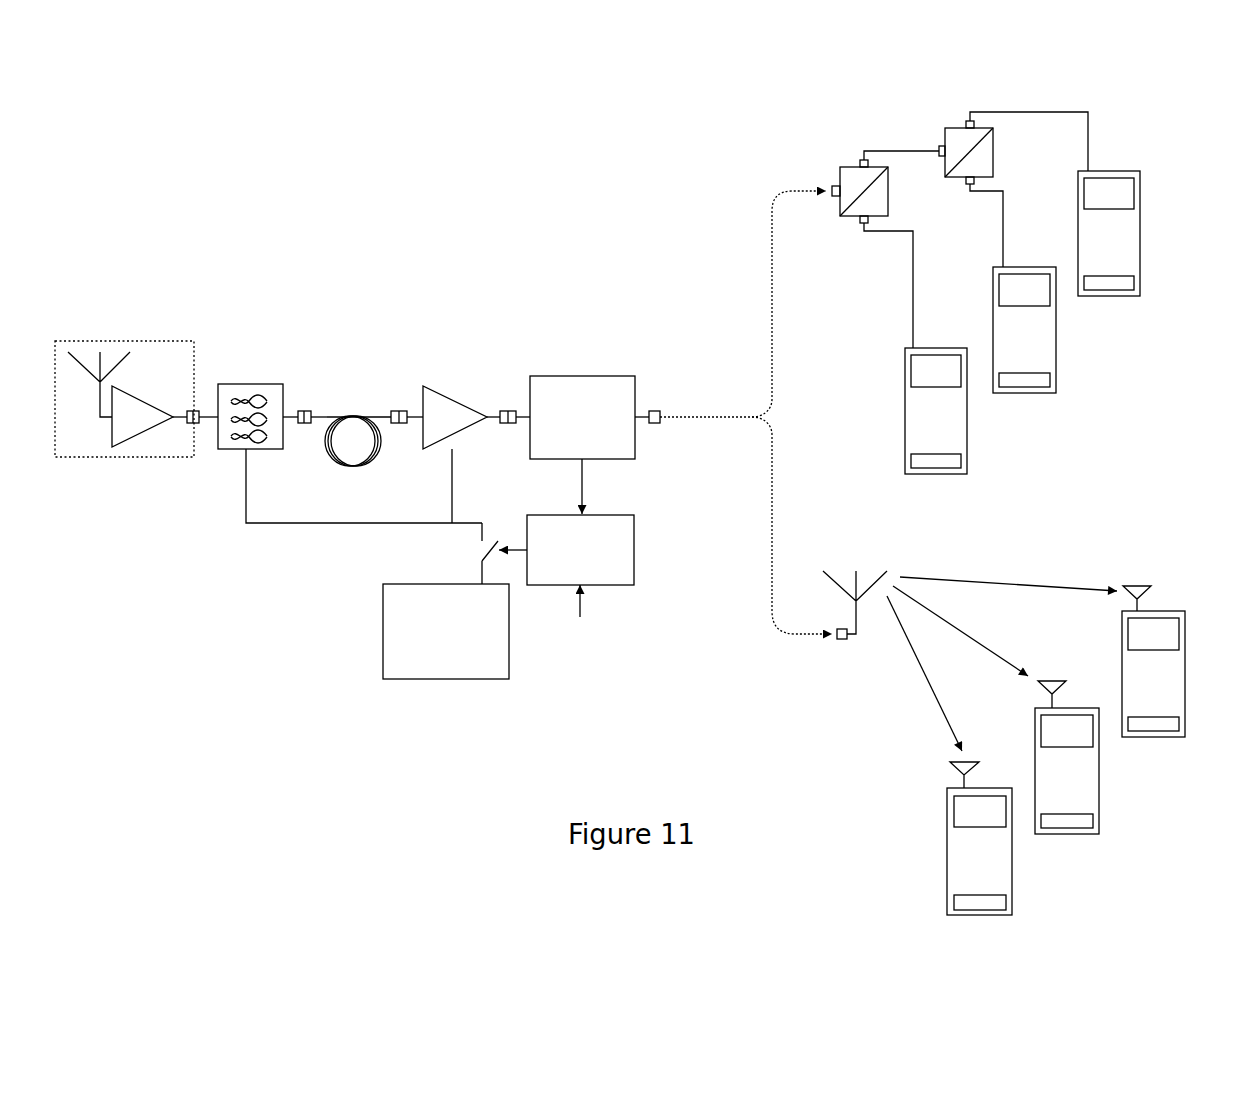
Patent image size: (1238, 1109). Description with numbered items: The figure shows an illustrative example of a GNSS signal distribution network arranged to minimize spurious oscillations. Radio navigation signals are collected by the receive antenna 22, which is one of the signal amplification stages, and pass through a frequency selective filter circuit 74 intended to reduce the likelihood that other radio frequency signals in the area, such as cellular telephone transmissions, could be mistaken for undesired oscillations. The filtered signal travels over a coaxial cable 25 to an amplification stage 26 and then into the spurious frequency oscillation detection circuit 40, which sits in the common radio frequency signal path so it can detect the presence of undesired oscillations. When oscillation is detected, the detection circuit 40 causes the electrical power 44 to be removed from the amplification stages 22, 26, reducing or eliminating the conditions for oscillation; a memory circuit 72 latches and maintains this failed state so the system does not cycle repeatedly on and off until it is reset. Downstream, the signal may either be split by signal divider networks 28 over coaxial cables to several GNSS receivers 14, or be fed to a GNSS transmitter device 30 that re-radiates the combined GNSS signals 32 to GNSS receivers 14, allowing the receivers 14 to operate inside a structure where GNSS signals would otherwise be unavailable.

The receive antenna 22 is at (100, 465).
The filter 74 is at (254, 382).
The coaxial cable 25 is at (341, 410).
The amplification stage 26 is at (462, 437).
The spurious frequency oscillation detection circuit 40 is at (594, 374).
The memory circuit 72 is at (638, 586).
The electrical power 44 is at (493, 683).
The signal divider network 28 is at (858, 150).
The GNSS receiver 14 is at (1142, 297).
The GNSS transmitter device 30 is at (852, 561).
The combined GNSS signals 32 is at (1057, 577).